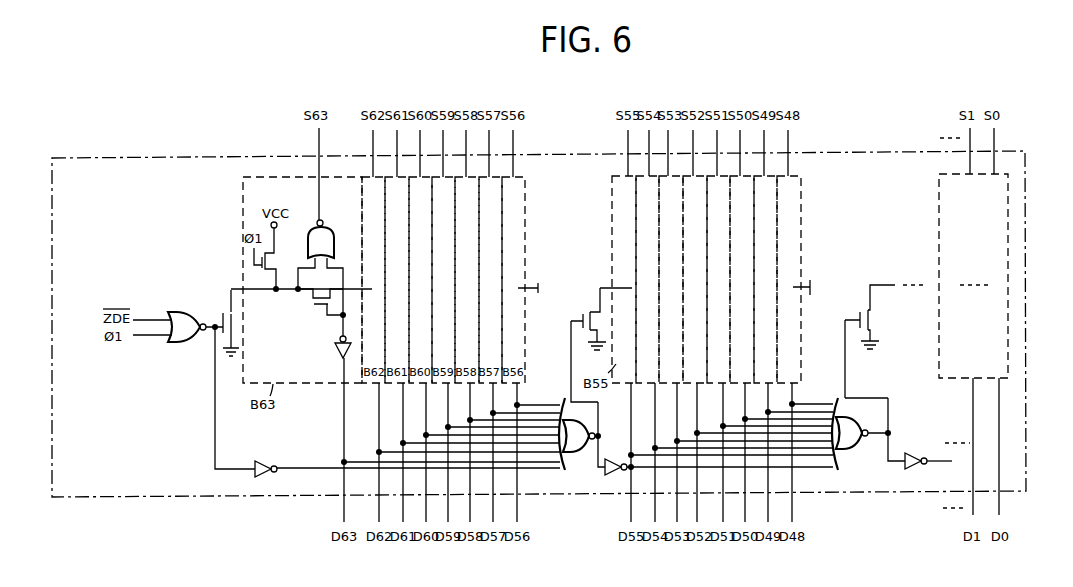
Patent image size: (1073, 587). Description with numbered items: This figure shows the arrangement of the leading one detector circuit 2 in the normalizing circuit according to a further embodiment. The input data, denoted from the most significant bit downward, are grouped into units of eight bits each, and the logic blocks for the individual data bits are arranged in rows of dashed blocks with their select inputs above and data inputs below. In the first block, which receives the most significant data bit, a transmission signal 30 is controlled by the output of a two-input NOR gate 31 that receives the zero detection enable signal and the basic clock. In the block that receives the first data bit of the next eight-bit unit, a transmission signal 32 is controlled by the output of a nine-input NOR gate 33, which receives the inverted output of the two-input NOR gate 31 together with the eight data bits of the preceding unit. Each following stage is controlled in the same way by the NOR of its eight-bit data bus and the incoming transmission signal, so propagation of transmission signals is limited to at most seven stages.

The priority encoder circuit 2 is at (1026, 276).
The transmission signal 30 is at (264, 290).
The two-input NOR gate 31 is at (178, 343).
The transmission signal 32 is at (600, 288).
The nine-input NOR gate 33 is at (566, 458).